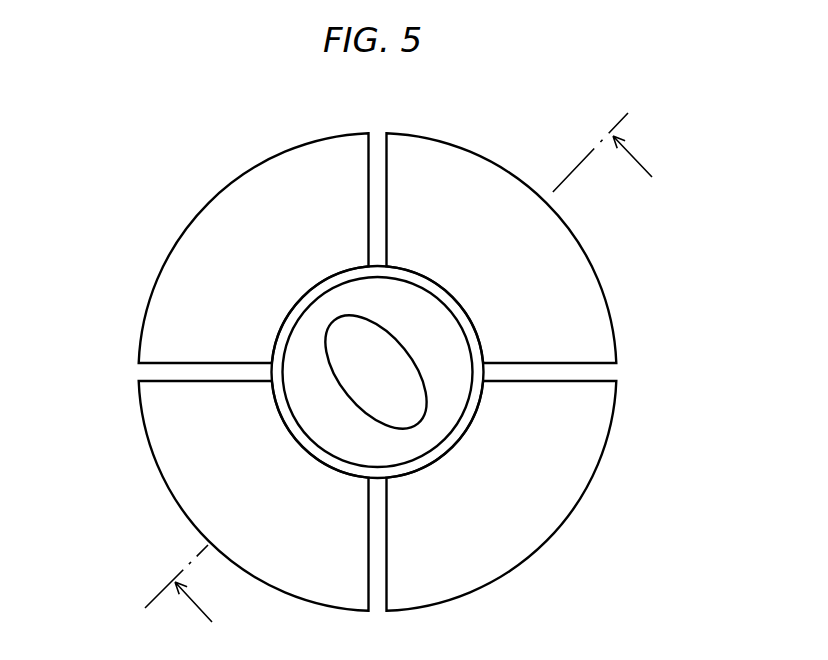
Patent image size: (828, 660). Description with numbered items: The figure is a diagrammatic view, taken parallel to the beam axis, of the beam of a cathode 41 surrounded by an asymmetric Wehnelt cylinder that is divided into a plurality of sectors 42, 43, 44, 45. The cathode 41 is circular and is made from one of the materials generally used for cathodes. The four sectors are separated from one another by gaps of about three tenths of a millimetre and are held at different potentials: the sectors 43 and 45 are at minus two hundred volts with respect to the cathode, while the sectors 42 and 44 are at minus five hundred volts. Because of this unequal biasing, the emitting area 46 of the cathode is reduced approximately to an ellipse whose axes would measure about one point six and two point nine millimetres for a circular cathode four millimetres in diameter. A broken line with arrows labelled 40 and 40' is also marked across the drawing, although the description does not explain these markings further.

The viewing direction arrow 40 is at (168, 583).
The viewing direction arrow 40' is at (601, 154).
The cathode 41 is at (453, 360).
The sector 42 is at (553, 238).
The sector 43 is at (215, 264).
The sector 44 is at (200, 480).
The sector 45 is at (458, 580).
The emitting area 46 is at (427, 402).